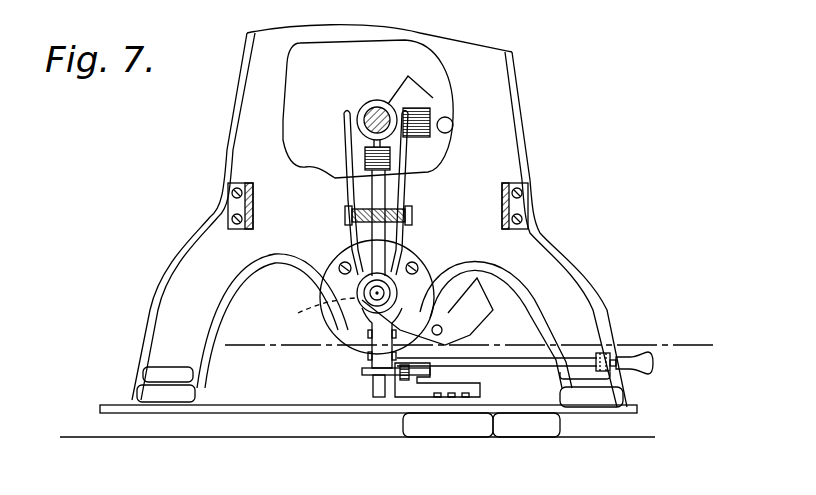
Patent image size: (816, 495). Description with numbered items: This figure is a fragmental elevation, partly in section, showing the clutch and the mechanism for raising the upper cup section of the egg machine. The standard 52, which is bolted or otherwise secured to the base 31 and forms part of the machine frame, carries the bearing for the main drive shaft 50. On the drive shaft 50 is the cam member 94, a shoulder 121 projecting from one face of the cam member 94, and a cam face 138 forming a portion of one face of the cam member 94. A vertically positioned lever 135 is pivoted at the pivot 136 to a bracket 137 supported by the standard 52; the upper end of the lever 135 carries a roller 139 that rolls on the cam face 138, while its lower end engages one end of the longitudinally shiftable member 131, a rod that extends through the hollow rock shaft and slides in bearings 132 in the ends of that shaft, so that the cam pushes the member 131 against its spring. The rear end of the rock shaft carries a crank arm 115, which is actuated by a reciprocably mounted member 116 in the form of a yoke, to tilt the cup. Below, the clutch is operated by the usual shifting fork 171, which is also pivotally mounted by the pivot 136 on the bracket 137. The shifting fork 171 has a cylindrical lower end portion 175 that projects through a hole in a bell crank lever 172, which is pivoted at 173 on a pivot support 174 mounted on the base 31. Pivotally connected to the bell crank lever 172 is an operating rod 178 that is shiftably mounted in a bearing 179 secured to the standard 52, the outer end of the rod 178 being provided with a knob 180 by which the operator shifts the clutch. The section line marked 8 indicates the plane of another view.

The standard 52 is at (517, 67).
The cam member 94 is at (310, 62).
The main drive shaft 50 is at (365, 107).
The cam face 138 is at (417, 105).
The shoulder 121 is at (442, 142).
The roller 139 is at (365, 155).
The shifting fork 171 is at (410, 175).
The lever 135 is at (377, 182).
The pivot 136 is at (412, 213).
The bracket 137 is at (240, 200).
The bearing 132 is at (360, 293).
The longitudinally shiftable member 131 is at (321, 317).
The crank arm 115 is at (483, 298).
The reciprocably mounted member 116 is at (475, 295).
The section line 8- 8 is at (246, 336).
The base 31 is at (118, 403).
The bell crank lever 172 is at (363, 370).
The cylindrical lower end portion 175 is at (373, 385).
The pivot 173 is at (415, 388).
The pivot support 174 is at (412, 402).
The operating rod 178 is at (503, 374).
The bearing 179 is at (601, 355).
The knob 180 is at (654, 363).